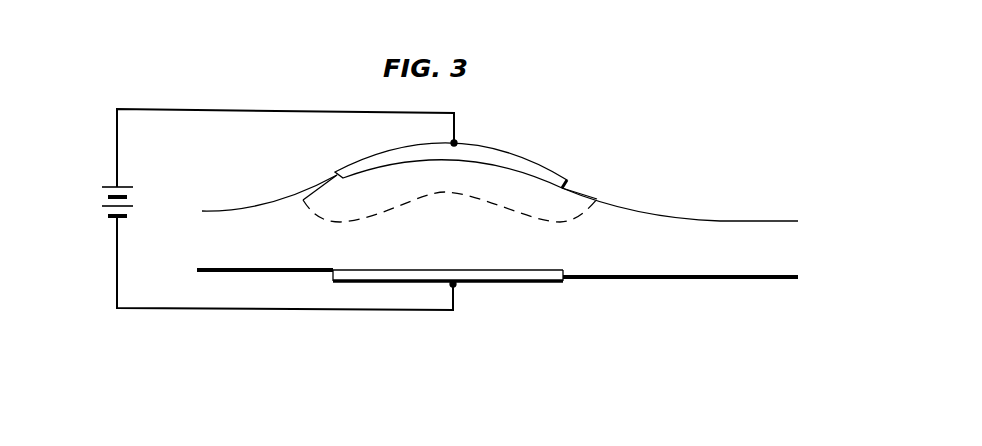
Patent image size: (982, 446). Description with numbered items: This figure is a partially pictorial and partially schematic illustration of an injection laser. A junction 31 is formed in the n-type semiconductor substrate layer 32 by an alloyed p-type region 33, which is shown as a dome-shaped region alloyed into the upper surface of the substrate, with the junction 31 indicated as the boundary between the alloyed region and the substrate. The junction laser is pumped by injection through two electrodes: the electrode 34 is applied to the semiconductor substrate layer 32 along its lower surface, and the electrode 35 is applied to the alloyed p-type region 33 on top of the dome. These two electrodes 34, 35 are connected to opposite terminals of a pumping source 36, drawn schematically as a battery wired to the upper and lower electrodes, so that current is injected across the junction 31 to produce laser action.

The junction 31 is at (557, 222).
The n-type semiconductor substrate layer 32 is at (673, 248).
The alloyed p-type region 33 is at (568, 207).
The electrode 34 is at (480, 280).
The electrode 35 is at (485, 150).
The pumping source 36 is at (105, 214).